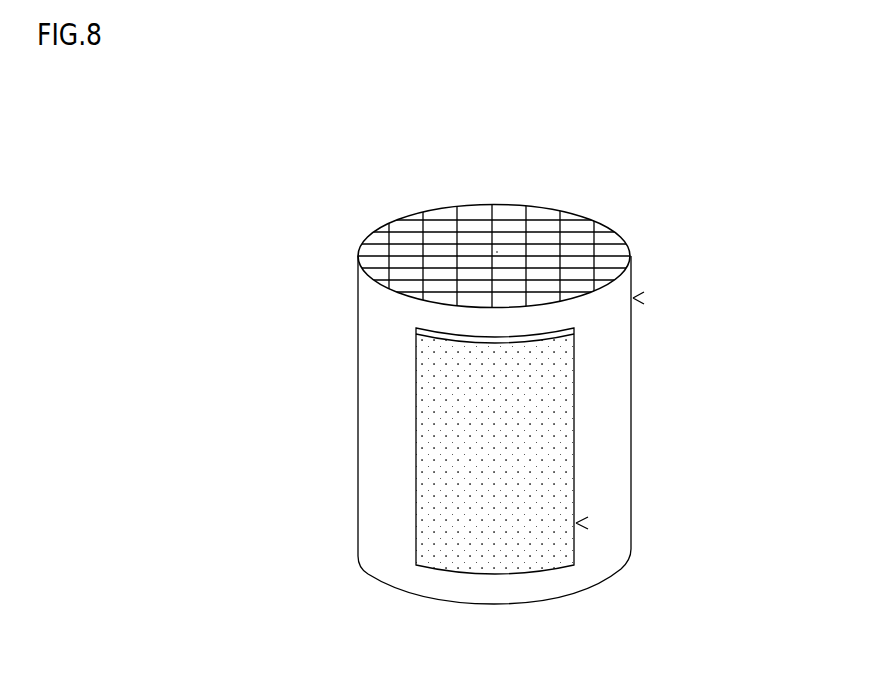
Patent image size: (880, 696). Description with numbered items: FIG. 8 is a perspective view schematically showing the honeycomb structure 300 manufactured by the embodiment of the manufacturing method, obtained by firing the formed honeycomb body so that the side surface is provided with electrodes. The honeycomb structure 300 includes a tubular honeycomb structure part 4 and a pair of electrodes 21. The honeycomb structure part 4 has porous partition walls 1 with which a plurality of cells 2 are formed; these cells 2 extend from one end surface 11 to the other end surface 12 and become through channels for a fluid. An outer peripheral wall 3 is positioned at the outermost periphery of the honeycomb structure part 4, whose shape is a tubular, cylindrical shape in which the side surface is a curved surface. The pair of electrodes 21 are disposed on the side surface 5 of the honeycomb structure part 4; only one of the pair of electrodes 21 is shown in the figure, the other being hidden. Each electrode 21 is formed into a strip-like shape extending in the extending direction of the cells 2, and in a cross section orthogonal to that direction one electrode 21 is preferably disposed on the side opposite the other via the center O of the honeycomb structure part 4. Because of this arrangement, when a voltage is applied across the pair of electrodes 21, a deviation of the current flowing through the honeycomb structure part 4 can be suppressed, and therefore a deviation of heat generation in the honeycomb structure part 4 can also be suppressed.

The honeycomb structure 300 is at (845, 78).
The partition walls 1 is at (382, 273).
The one end surface 11 is at (372, 234).
The other end surface 12 is at (625, 577).
The cells 2 is at (402, 225).
The outer peripheral wall 3 is at (618, 364).
The honeycomb structure part 4 is at (634, 298).
The side surface 5 is at (616, 450).
The electrodes 21 is at (577, 523).
The center O is at (497, 252).